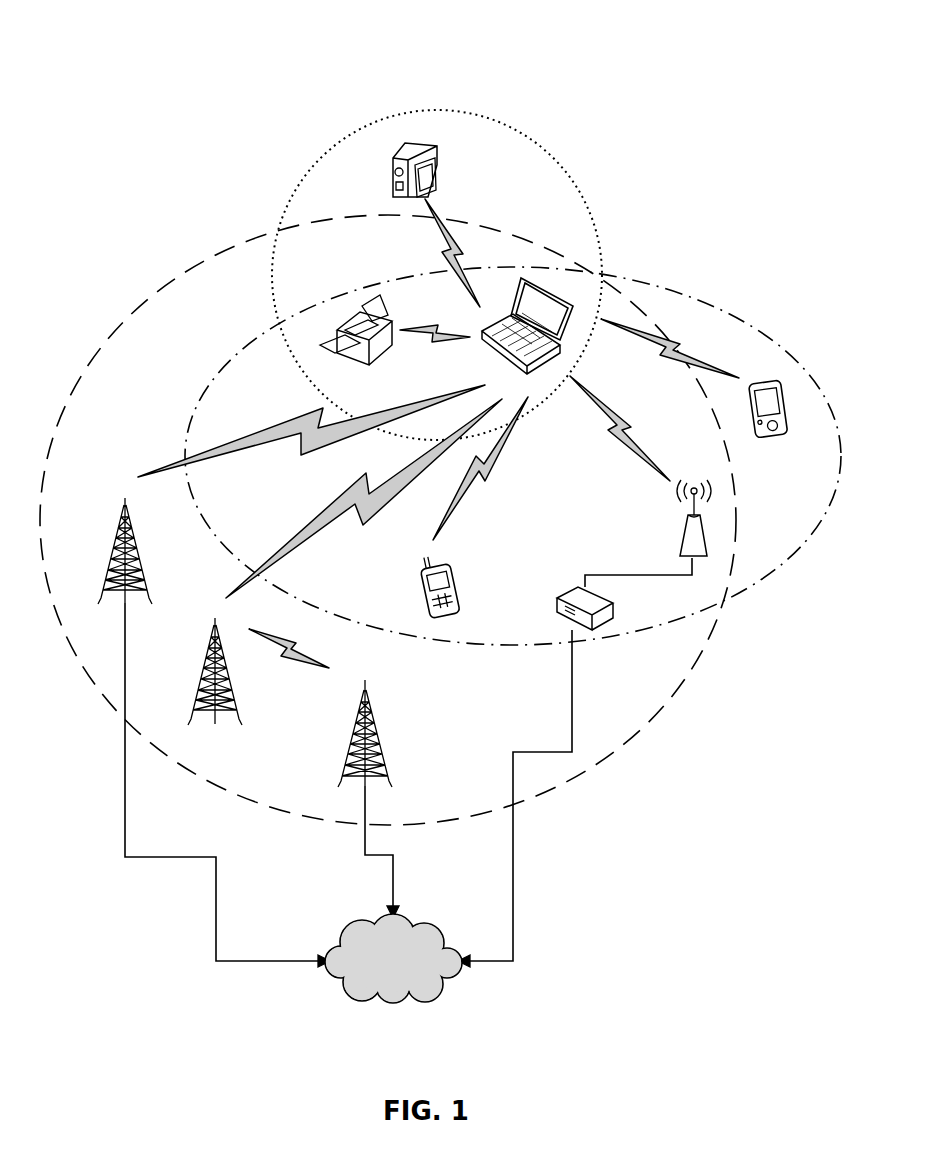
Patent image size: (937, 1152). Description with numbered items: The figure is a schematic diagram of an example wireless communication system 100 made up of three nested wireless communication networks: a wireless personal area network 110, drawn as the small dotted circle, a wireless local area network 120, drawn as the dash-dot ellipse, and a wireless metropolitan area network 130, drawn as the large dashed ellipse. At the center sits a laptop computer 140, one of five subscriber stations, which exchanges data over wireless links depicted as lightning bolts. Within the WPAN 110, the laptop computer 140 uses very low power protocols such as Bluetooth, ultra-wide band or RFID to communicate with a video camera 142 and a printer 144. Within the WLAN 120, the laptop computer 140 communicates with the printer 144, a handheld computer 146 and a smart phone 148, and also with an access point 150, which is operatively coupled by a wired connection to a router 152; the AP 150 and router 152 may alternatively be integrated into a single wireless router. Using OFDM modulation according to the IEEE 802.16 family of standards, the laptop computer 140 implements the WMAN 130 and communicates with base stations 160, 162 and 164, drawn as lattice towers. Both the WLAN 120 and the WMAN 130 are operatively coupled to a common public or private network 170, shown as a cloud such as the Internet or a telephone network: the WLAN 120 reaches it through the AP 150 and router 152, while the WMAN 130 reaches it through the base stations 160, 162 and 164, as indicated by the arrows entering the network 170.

The wireless communication system 100 is at (123, 42).
The wireless personal area network (WPAN) 110 is at (440, 108).
The wireless local area network (WLAN) 120 is at (171, 423).
The wireless metropolitan area network (WMAN) 130 is at (210, 252).
The laptop computer 140 is at (529, 275).
The video camera 142 is at (436, 168).
The printer 144 is at (365, 363).
The handheld computer 146 is at (765, 382).
The smart phone 148 is at (447, 572).
The access point (AP) 150 is at (684, 540).
The router 152 is at (565, 590).
The base station 160 is at (118, 540).
The base station 162 is at (207, 665).
The base station 164 is at (357, 730).
The common public or private network 170 is at (348, 930).